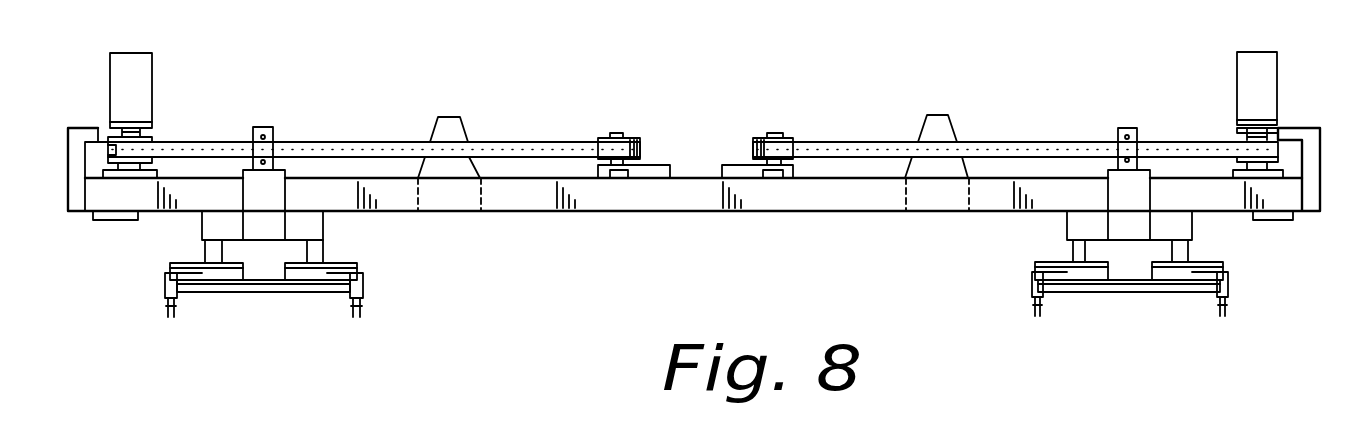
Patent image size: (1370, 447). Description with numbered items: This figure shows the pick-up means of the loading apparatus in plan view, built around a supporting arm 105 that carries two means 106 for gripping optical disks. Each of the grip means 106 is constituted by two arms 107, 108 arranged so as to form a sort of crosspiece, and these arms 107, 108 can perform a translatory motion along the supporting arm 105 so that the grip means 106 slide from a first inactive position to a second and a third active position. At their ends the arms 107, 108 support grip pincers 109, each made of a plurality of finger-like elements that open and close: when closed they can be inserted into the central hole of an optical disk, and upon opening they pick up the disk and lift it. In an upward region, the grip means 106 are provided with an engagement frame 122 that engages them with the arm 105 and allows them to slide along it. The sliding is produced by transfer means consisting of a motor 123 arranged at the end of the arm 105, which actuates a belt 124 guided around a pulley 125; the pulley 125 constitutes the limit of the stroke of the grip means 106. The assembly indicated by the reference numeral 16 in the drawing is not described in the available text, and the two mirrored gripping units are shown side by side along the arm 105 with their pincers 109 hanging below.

The tool assembly 16 is at (296, 318).
The arm 105 is at (636, 201).
The means for gripping the optical disks 106 is at (1009, 143).
The arm 107 is at (345, 262).
The arm 108 is at (192, 263).
The grip pincers 109 is at (176, 307).
The engagement frame 122 is at (272, 185).
The motor 123 is at (142, 73).
The belt 124 is at (517, 147).
The pulley 125 is at (627, 138).